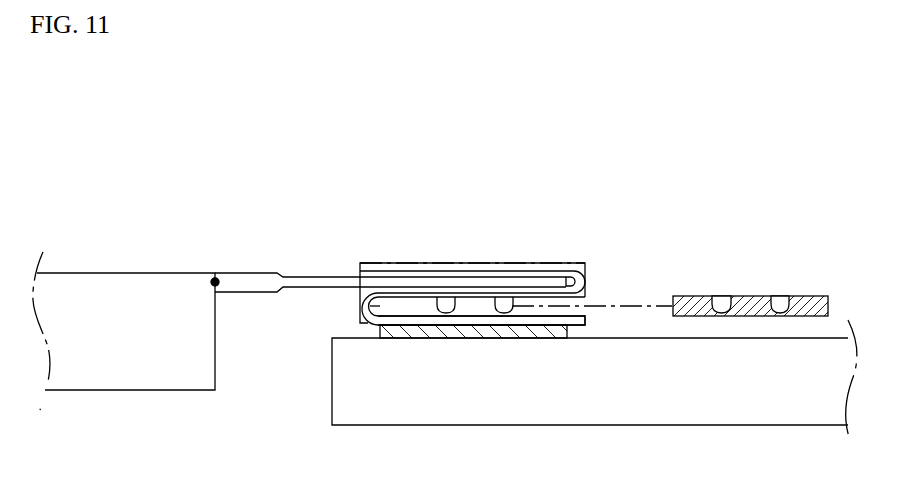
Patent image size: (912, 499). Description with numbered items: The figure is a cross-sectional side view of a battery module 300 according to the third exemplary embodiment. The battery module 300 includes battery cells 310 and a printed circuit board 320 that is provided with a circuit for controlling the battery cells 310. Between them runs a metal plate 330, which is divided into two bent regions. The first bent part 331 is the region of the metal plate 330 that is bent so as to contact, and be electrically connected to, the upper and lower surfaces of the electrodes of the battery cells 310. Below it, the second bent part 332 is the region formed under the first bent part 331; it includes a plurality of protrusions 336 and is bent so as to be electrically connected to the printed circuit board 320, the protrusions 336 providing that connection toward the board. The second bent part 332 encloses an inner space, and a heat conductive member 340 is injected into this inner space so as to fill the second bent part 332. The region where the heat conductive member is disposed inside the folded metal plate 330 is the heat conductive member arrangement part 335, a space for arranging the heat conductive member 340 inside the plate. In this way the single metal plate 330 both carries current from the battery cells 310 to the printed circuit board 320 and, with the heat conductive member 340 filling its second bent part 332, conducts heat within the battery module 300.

The battery module 300 is at (50, 202).
The battery cells 310 is at (126, 331).
The printed circuit board 320 is at (594, 380).
The metal plate 330 is at (443, 271).
The first bent part 331 is at (532, 262).
The second bent part 332 is at (597, 318).
The heat conductive member arrangement part 335 is at (362, 306).
The protrusions 336 is at (443, 305).
The heat conductive member 340 is at (752, 296).